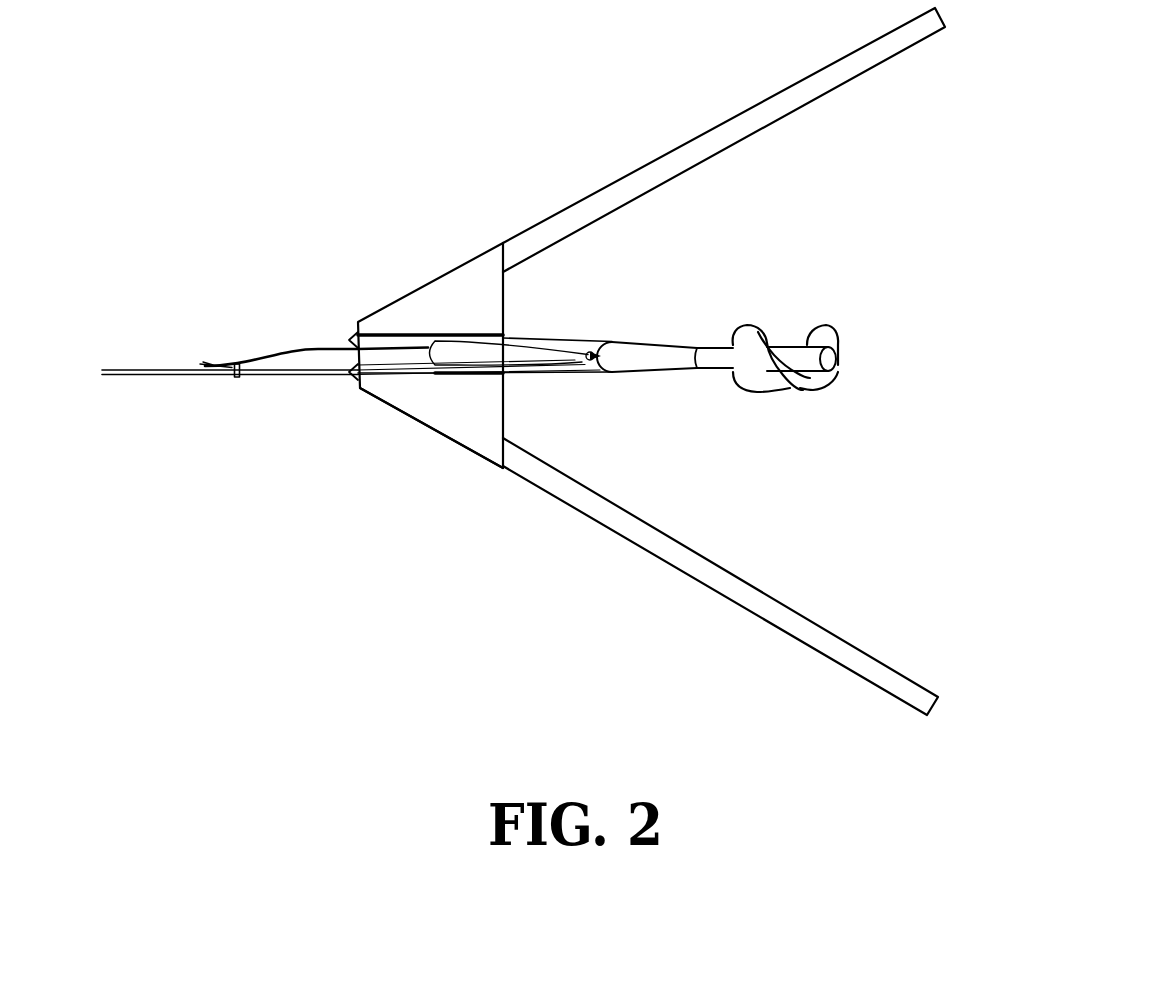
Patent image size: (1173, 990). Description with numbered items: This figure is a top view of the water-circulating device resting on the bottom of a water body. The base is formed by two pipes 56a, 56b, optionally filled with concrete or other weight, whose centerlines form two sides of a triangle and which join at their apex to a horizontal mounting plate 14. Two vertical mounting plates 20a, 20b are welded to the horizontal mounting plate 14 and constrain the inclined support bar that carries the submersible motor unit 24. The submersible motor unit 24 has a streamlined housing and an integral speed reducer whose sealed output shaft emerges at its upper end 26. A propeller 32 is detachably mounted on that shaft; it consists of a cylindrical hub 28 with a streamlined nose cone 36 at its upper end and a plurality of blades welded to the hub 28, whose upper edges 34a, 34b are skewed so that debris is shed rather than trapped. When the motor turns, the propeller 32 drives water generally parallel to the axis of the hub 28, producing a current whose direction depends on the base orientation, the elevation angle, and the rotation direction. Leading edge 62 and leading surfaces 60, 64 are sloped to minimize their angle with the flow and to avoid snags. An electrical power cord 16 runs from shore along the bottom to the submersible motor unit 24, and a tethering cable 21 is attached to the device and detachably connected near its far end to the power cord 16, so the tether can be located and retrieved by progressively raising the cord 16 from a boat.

The horizontal mounting plate 14 is at (438, 418).
The electrical power cord 16 is at (188, 372).
The vertical mounting plate 20a is at (365, 390).
The vertical mounting plate 20b is at (383, 337).
The tethering cable 21 is at (303, 348).
The submersible motor unit 24 is at (655, 366).
The upper end 26 is at (692, 375).
The cylindrical hub 28 is at (826, 368).
The propeller 32 is at (845, 340).
The upper edge of propeller blade 34a is at (763, 383).
The upper edge of propeller blade 34b is at (810, 388).
The streamlined nose cone 36 is at (837, 367).
The pipe 56a is at (732, 588).
The pipe 56b is at (735, 128).
The leading surface 60 is at (713, 361).
The leading edge 62 is at (483, 463).
The leading surface 64 is at (645, 353).